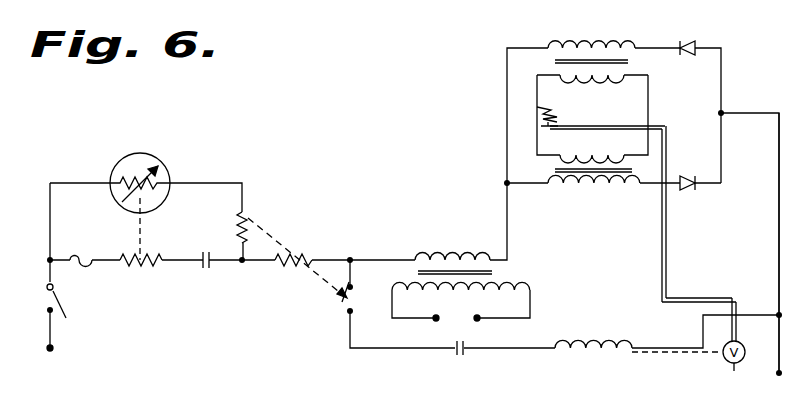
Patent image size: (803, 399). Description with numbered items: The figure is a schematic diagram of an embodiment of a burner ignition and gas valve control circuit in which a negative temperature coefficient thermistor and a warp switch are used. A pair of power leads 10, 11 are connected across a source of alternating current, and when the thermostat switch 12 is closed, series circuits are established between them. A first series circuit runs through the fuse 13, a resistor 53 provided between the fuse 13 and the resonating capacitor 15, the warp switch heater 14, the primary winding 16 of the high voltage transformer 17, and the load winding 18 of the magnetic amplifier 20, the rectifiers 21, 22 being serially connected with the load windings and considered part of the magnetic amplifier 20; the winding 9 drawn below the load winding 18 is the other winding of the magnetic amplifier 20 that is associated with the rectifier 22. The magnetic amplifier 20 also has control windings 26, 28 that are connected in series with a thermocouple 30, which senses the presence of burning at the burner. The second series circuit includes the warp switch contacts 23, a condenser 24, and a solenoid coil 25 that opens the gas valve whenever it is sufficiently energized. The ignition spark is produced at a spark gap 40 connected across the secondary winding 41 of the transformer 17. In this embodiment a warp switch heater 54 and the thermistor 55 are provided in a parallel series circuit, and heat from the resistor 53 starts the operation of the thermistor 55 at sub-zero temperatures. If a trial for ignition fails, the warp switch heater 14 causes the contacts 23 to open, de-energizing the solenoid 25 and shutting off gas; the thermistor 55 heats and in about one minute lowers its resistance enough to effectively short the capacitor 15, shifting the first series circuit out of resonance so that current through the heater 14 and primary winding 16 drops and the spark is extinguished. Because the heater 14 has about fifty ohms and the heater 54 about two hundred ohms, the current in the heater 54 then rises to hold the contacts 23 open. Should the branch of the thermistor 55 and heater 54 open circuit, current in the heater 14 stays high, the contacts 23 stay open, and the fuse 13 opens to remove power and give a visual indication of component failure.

The secondary winding 9 is at (590, 187).
The power lead 10 is at (58, 337).
The power lead 11 is at (775, 278).
The thermostat switch 12 is at (60, 300).
The fuse 13 is at (80, 259).
The warp switch heater 14 is at (306, 257).
The resonating capacitor 15 is at (212, 268).
The primary winding 16 is at (447, 255).
The high voltage transformer 17 is at (500, 270).
The load winding 18 is at (612, 50).
The magnetic amplifier 20 is at (505, 137).
The rectifier 21 is at (697, 47).
The rectifier 22 is at (692, 190).
The warp switch contacts 23 is at (345, 297).
The condenser 24 is at (462, 352).
The solenoid coil 25 is at (632, 340).
The control winding 26 is at (600, 78).
The control winding 28 is at (605, 155).
The thermocouple 30 is at (555, 108).
The spark gap 40 is at (455, 318).
The secondary winding 41 is at (530, 283).
The resistor 53 is at (140, 268).
The warp switch heater 54 is at (248, 212).
The negative temperature coefficient thermistor 55 is at (140, 153).